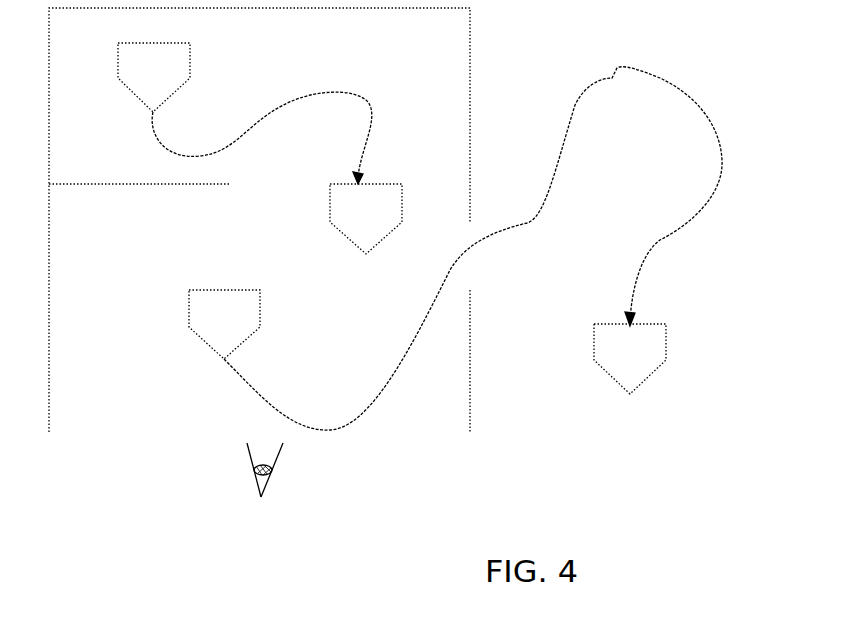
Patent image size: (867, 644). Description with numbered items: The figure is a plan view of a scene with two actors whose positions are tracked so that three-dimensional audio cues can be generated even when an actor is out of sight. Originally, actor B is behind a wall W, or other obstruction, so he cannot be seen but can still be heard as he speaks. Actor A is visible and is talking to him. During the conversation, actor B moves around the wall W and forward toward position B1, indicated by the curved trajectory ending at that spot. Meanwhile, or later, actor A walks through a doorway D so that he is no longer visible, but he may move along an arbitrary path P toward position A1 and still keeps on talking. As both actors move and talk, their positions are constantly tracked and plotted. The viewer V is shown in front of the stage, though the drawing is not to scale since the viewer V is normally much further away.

The wall W is at (259, 220).
The doorway D is at (484, 349).
The actor B is at (173, 77).
The position B1 is at (277, 173).
The actor A is at (248, 324).
The position A1 is at (652, 359).
The arbitrary path P is at (473, 248).
The viewer V is at (277, 470).